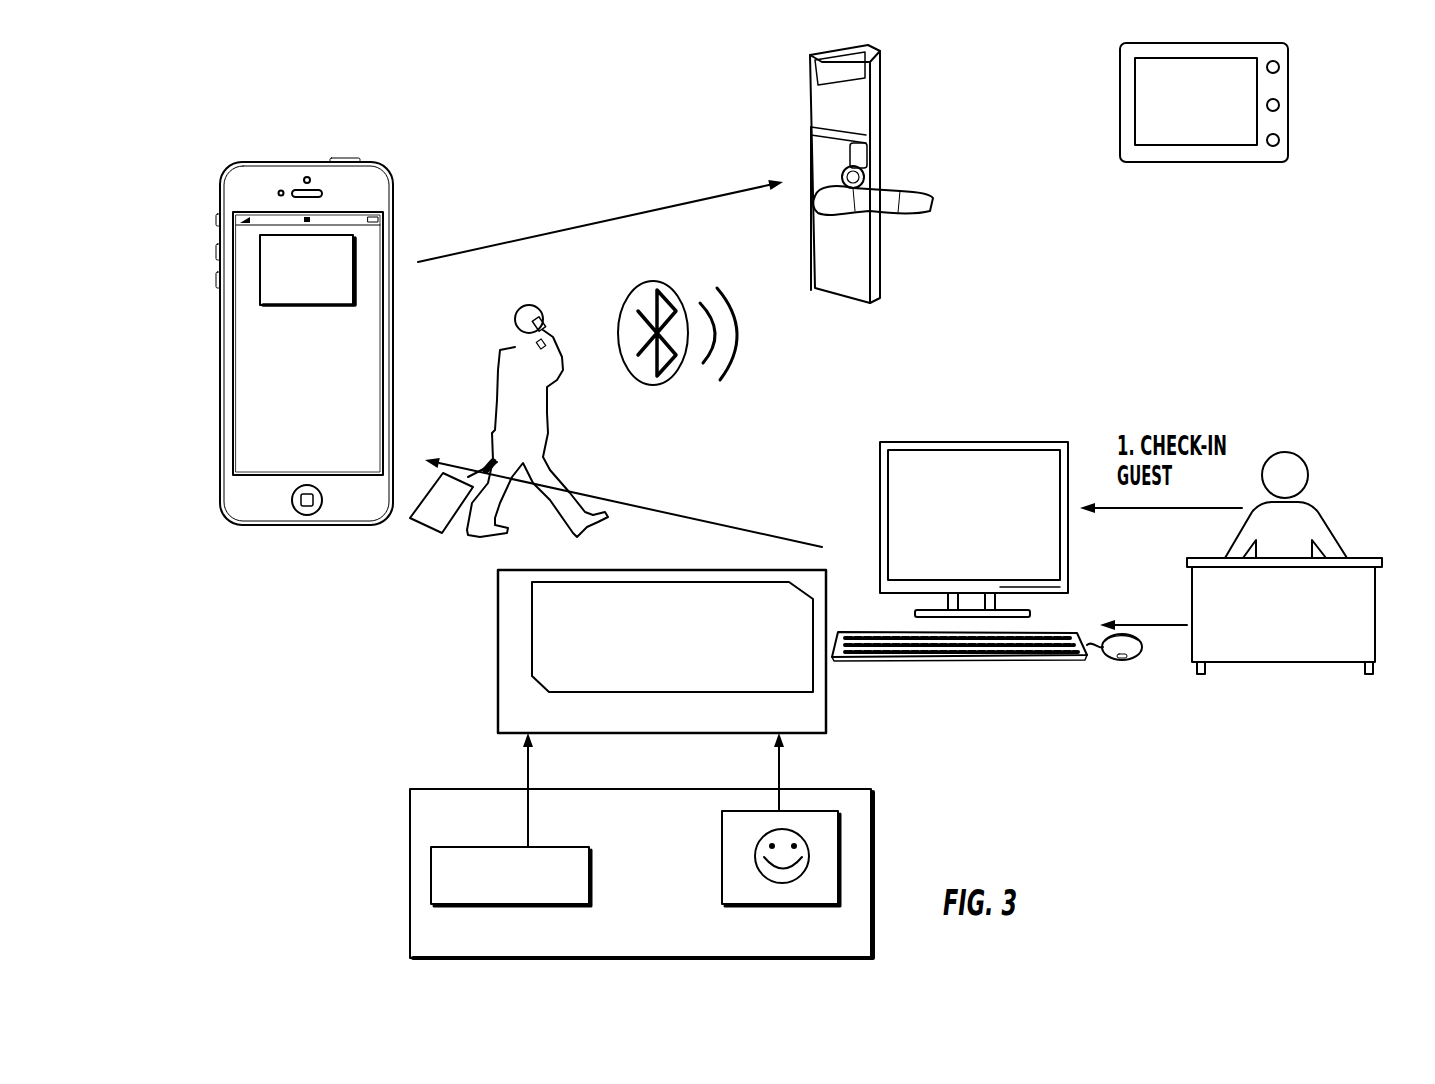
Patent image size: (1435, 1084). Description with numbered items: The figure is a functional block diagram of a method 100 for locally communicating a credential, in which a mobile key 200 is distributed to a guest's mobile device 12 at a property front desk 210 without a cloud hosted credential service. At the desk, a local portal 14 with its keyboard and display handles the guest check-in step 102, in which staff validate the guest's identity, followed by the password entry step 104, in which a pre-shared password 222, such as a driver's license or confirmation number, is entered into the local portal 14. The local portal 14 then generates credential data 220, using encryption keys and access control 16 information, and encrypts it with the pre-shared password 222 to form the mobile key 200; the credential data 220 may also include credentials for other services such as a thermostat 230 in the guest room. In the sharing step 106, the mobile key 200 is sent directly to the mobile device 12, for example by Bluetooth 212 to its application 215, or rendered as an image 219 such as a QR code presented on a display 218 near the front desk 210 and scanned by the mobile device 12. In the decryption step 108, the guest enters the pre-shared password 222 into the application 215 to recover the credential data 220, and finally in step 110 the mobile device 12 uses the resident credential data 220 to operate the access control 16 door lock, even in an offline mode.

The mobile device 12 is at (250, 425).
The local portal 14 is at (985, 442).
The access control 16 is at (880, 167).
The method 100 is at (1103, 303).
The guest check-in step 102 is at (1198, 397).
The password entry step 104 is at (1120, 750).
The mobile key sharing step 106 is at (750, 453).
The password entry and decryption step 108 is at (287, 623).
The credential utilization step 110 is at (615, 138).
The mobile key 200 is at (606, 678).
The property front desk 210 is at (1293, 648).
The Bluetooth 212 is at (728, 370).
The application 215 is at (270, 262).
The display 218 is at (780, 858).
The image 219 is at (805, 855).
The credential data 220 is at (643, 681).
The pre-shared password 222 is at (493, 908).
The thermostat 230 is at (1293, 90).